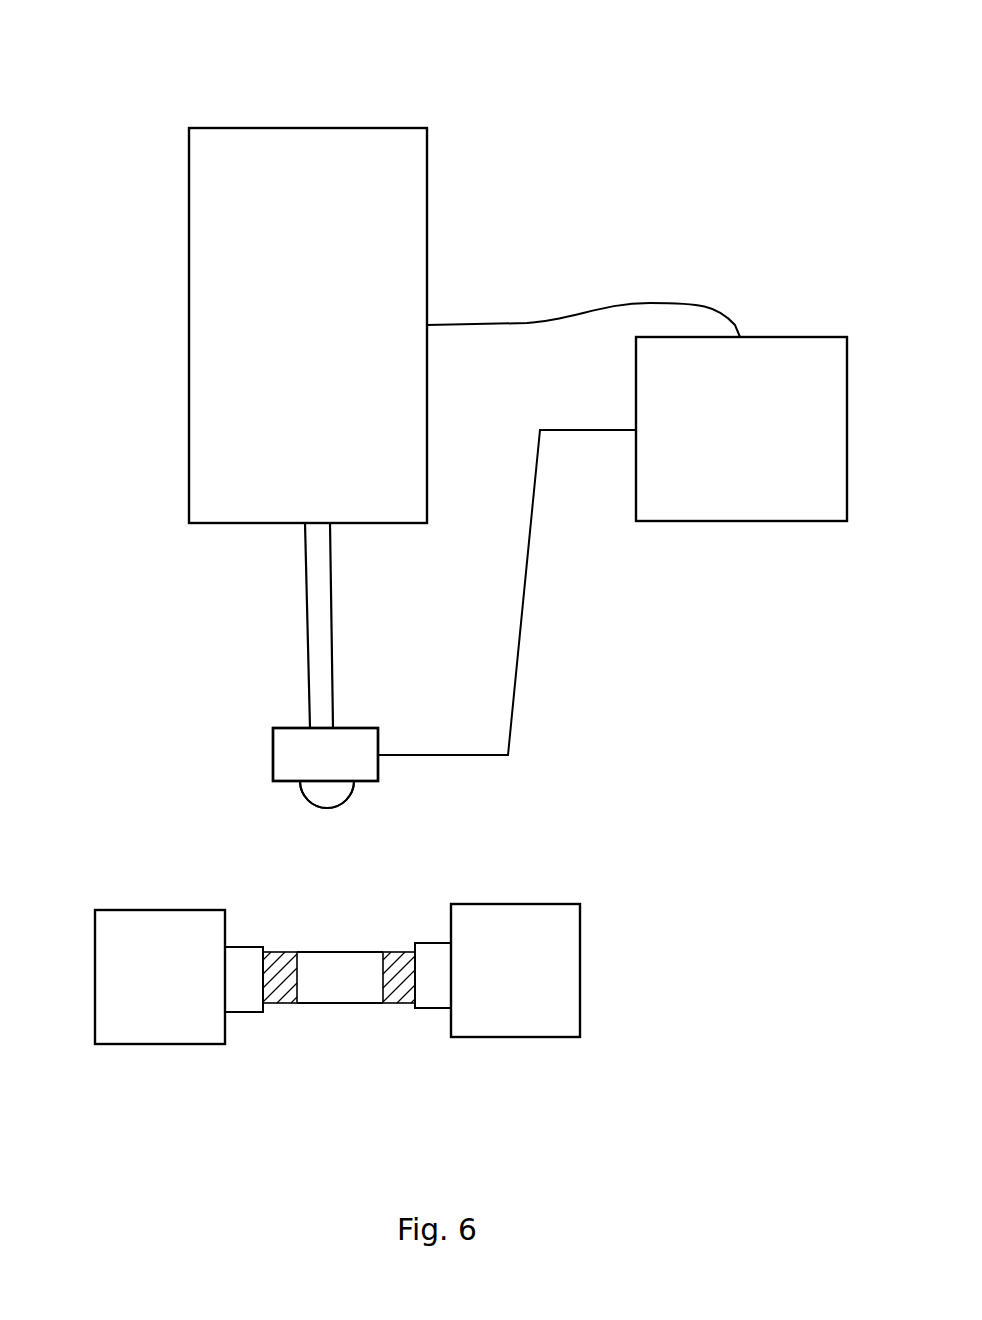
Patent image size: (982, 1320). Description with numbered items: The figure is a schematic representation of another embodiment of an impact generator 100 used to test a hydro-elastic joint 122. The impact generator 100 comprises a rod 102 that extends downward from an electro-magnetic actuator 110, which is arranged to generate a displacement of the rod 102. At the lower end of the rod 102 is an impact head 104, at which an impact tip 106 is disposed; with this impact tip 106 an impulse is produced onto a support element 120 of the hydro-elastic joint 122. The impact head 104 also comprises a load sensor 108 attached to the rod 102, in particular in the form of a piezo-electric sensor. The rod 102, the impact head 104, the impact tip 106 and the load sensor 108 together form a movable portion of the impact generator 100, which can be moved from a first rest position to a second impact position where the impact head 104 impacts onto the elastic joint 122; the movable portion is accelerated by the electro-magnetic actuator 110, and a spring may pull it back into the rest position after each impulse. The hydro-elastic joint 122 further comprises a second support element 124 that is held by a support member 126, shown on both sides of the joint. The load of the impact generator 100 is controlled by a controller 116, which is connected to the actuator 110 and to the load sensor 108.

The impact generator 100 is at (526, 173).
The rod 102 is at (318, 624).
The impact head 104 is at (218, 774).
The impact tip 106 is at (332, 798).
The load sensor 108 is at (365, 769).
The electro-magnetic actuator 110 is at (305, 212).
The controller 116 is at (771, 445).
The support element 120 is at (337, 962).
The hydro-elastic joint 122 is at (352, 1024).
The second support element 124 is at (247, 997).
The support member 126 is at (188, 993).